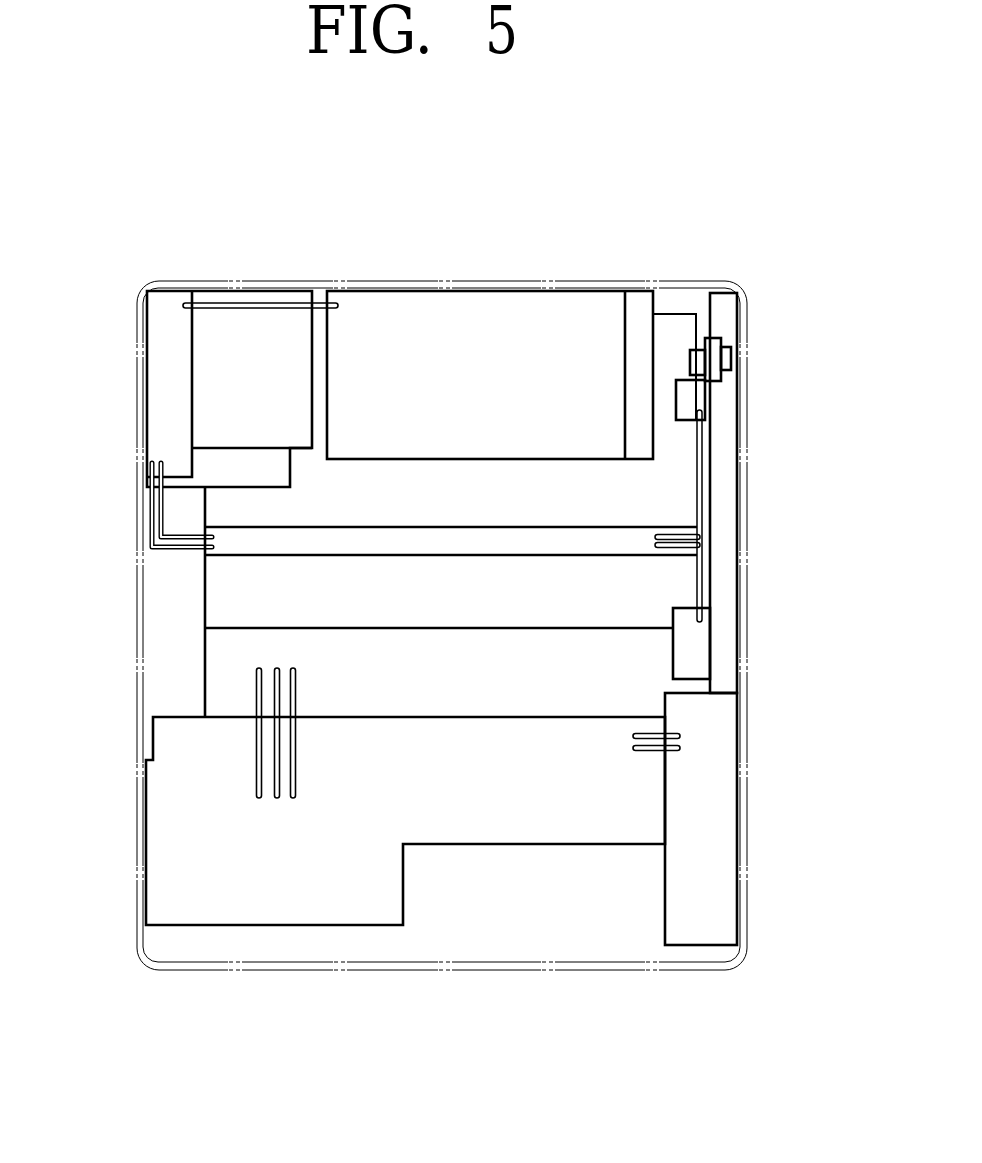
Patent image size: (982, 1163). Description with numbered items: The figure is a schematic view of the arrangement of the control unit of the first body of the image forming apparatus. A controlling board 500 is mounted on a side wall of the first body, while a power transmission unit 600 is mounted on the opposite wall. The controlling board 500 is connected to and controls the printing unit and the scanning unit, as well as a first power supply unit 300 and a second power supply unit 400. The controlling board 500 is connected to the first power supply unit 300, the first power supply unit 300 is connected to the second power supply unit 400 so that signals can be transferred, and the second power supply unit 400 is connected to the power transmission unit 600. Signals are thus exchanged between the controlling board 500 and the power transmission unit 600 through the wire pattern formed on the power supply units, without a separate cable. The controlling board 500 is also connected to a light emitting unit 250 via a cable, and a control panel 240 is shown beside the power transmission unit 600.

The control panel 240 is at (710, 823).
The light emitting unit 250 is at (485, 320).
The first power supply unit 300 is at (230, 602).
The second power supply unit 400 is at (180, 737).
The controlling board 500 is at (163, 382).
The power transmission unit 600 is at (722, 525).